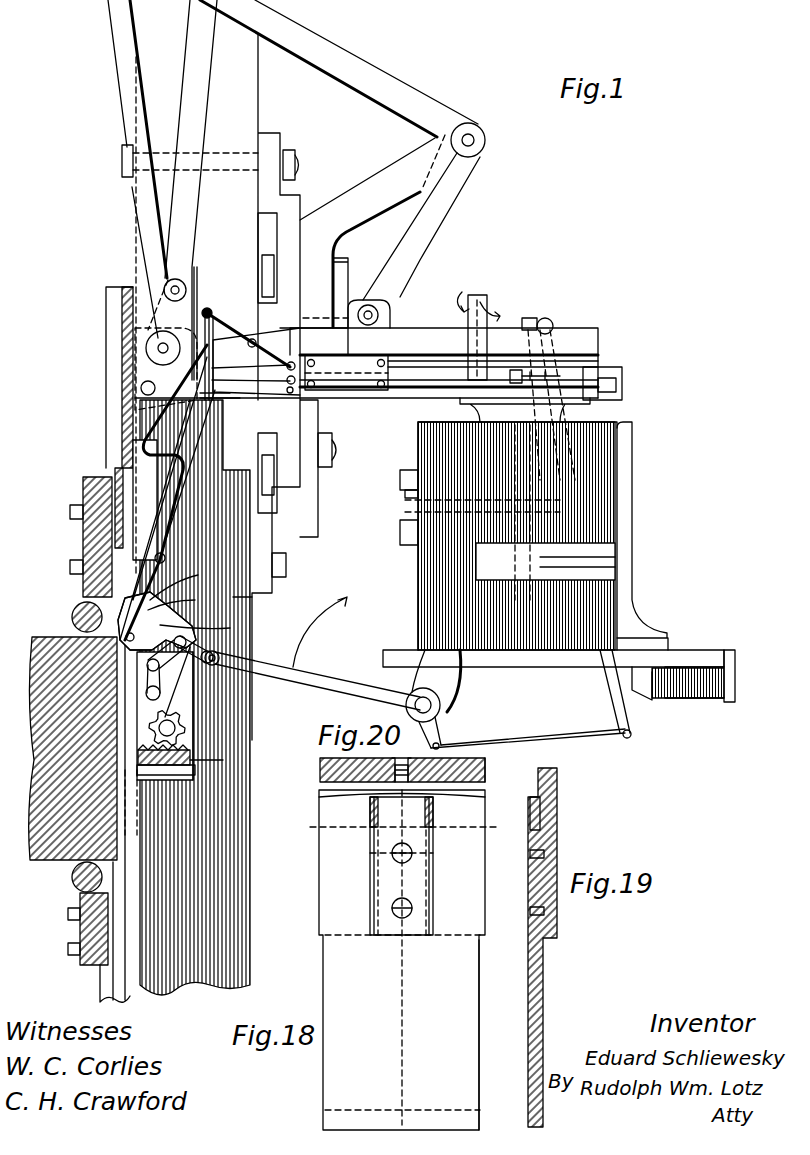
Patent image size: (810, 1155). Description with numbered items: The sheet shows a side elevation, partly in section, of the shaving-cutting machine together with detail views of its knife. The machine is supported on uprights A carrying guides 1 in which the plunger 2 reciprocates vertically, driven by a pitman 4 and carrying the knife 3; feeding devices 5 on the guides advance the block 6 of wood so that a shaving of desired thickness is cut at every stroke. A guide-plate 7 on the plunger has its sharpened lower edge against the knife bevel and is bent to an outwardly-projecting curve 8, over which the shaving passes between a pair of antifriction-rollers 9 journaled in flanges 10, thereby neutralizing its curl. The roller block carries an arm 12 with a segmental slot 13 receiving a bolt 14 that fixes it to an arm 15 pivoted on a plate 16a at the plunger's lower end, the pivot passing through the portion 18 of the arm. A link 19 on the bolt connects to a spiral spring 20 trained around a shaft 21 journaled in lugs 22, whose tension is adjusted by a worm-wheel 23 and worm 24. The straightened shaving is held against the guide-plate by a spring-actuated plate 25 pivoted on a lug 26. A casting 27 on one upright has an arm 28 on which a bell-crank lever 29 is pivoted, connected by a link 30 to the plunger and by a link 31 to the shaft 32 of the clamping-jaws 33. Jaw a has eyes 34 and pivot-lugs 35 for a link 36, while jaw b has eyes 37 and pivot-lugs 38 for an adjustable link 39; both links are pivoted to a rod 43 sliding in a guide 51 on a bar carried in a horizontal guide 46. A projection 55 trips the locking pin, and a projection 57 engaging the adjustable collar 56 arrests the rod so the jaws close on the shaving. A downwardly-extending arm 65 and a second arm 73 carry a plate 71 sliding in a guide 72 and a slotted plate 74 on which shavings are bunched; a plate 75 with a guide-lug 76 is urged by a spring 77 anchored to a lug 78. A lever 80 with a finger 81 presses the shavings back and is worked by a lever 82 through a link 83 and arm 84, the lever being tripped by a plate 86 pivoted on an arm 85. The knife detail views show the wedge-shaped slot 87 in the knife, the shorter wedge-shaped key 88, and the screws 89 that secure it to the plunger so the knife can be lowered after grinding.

In FIG. 1, the guides 1 is at (106, 385).
In FIG. 1, the plunger 2 is at (122, 305).
In FIG. 20, the plunger 2 is at (486, 762).
In FIG. 1, the knife 3 is at (117, 553).
In FIG. 20, the knife 3 is at (320, 770).
In FIG. 18, the knife 3 is at (477, 962).
In FIG. 1, the pitman 4 is at (125, 82).
In FIG. 1, the feeding devices 5 is at (72, 612).
In FIG. 1, the block 6 is at (256, 361).
In FIG. 1, the guide-plate 7 is at (140, 460).
In FIG. 1, the outwardly-projecting curve 8 is at (174, 598).
In FIG. 1, the antifriction-rollers 9 is at (176, 581).
In FIG. 1, the flanges 10 is at (243, 603).
In FIG. 1, the arm 12 is at (203, 633).
In FIG. 1, the segmental slot 13 is at (215, 650).
In FIG. 1, the bolt 14 is at (148, 690).
In FIG. 1, the arm 15 is at (175, 690).
In FIG. 1, the plate 16a is at (135, 800).
In FIG. 1, the portion of the arm 18 is at (120, 640).
In FIG. 18, the link 19 is at (520, 780).
In FIG. 1, the spiral spring 20 is at (200, 740).
In FIG. 18, the spiral spring 20 is at (402, 827).
In FIG. 1, the shaft 21 is at (192, 755).
In FIG. 1, the lugs 22 is at (140, 730).
In FIG. 1, the worm-wheel 23 is at (195, 768).
In FIG. 1, the worm 24 is at (166, 777).
In FIG. 1, the spring-actuated plate 25 is at (185, 497).
In FIG. 1, the lug 26 is at (175, 548).
In FIG. 1, the casting 27 is at (300, 192).
In FIG. 1, the arm 28 is at (372, 245).
In FIG. 1, the bell-crank lever 29 is at (386, 97).
In FIG. 1, the link 30 is at (203, 112).
In FIG. 1, the link 31 is at (295, 330).
In FIG. 1, the shaft 32 is at (188, 302).
In FIG. 1, the clamping-jaws 33 is at (215, 320).
In FIG. 1, the eyes 34 is at (166, 345).
In FIG. 1, the pivot-lugs 35 is at (208, 405).
In FIG. 1, the link 36 is at (253, 373).
In FIG. 1, the eyes 37 is at (273, 404).
In FIG. 1, the pivot-lugs 38 is at (210, 302).
In FIG. 1, the link 39 is at (236, 332).
In FIG. 1, the rod 43 is at (415, 378).
In FIG. 1, the guide 46 is at (590, 345).
In FIG. 1, the guide 51 is at (357, 390).
In FIG. 1, the projection 55 is at (622, 380).
In FIG. 1, the adjustable collar 56 is at (525, 378).
In FIG. 1, the projection 57 is at (590, 404).
In FIG. 1, the downwardly-extending arm 65 is at (590, 448).
In FIG. 1, the plate 71 is at (404, 518).
In FIG. 1, the guide 72 is at (400, 478).
In FIG. 1, the downwardly-extending arm 73 is at (452, 686).
In FIG. 1, the slotted plate 74 is at (560, 662).
In FIG. 1, the plate 75 is at (620, 547).
In FIG. 1, the guide-lug 76 is at (645, 700).
In FIG. 1, the spring 77 is at (705, 700).
In FIG. 1, the lug 78 is at (735, 683).
In FIG. 1, the lever 80 is at (326, 680).
In FIG. 1, the finger 81 is at (250, 685).
In FIG. 1, the lever 82 is at (615, 718).
In FIG. 1, the link 83 is at (531, 730).
In FIG. 1, the arm 84 is at (470, 738).
In FIG. 1, the arm 85 is at (487, 300).
In FIG. 1, the plate 86 is at (474, 290).
In FIG. 18, the wedge-shaped slot 87 is at (372, 815).
In FIG. 19, the wedge-shaped slot 87 is at (557, 808).
In FIG. 20, the wedge-shaped key 88 is at (410, 758).
In FIG. 18, the wedge-shaped key 88 is at (420, 886).
In FIG. 20, the screws 89 is at (408, 758).
In FIG. 18, the screws 89 is at (400, 905).
In FIG. 19, the screws 89 is at (530, 856).
In FIG. 1, the jaw a is at (200, 496).
In FIG. 1, the jaw b is at (32, 640).
In FIG. 1, the uprights A is at (250, 905).
In FIG. 19, the strip B is at (549, 947).